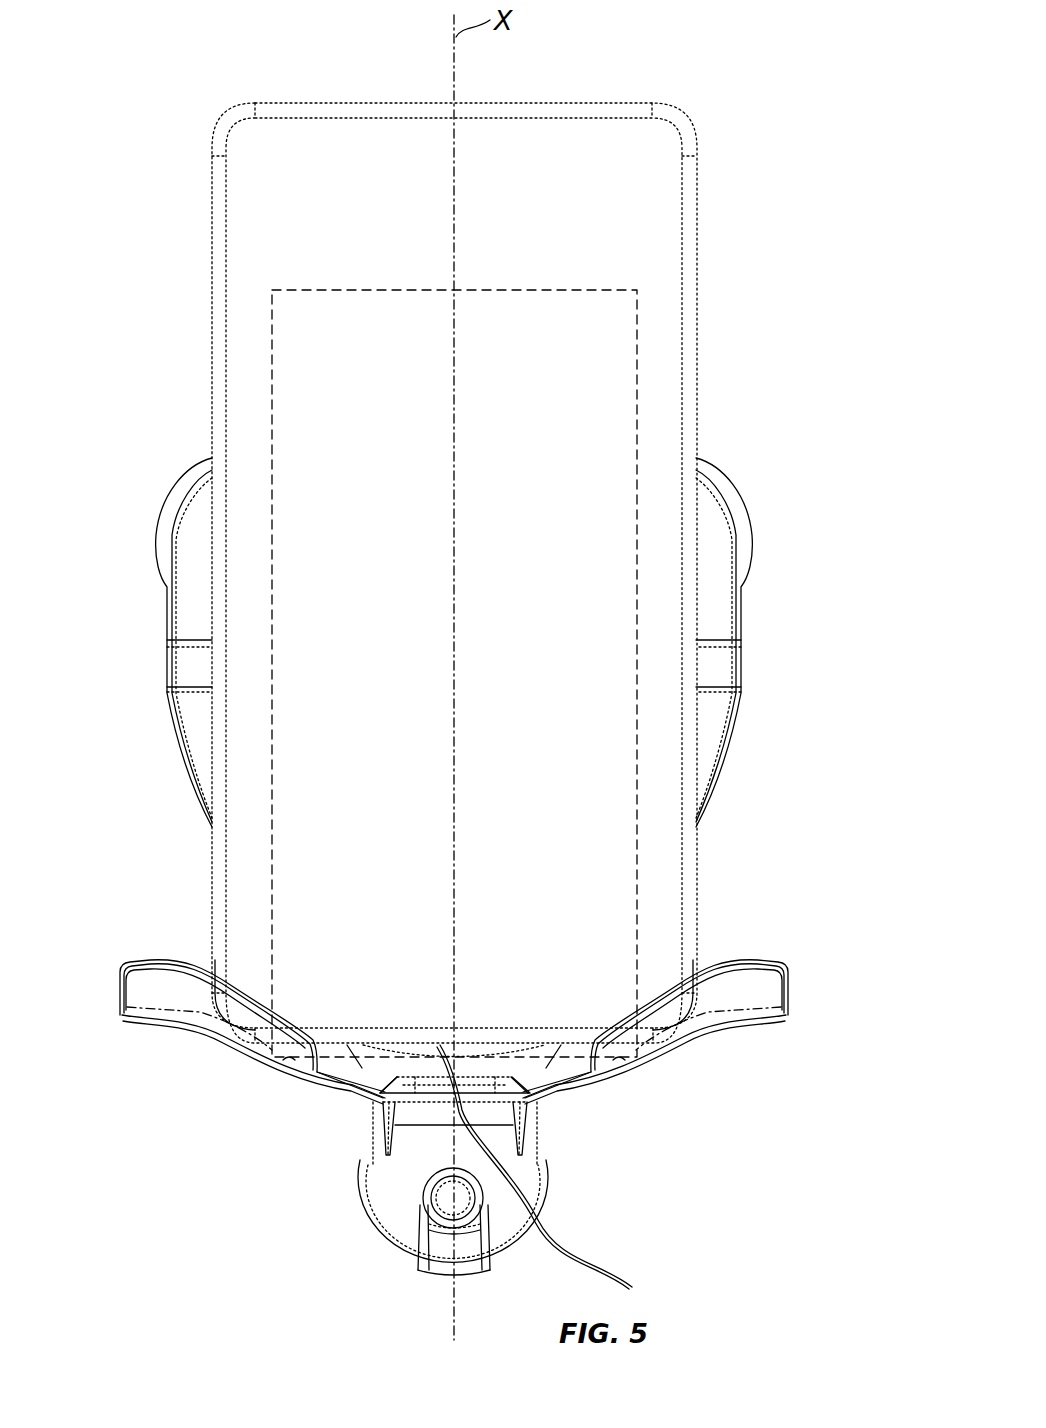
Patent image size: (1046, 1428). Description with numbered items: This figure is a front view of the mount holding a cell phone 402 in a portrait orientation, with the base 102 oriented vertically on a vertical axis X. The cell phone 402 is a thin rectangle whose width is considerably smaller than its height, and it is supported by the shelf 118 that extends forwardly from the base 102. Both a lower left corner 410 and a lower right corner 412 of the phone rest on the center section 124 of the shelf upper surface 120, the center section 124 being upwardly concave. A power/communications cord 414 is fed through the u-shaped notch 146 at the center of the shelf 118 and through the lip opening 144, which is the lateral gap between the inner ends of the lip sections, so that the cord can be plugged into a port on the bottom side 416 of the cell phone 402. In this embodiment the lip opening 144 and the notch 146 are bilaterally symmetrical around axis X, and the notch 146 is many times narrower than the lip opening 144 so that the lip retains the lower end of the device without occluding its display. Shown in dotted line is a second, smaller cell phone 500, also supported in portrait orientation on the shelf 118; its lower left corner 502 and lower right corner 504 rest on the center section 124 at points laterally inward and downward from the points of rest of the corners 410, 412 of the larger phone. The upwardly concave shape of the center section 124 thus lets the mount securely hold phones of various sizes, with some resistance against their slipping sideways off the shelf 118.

The cell phone 402 is at (667, 173).
The second, alternative, smaller cell phone 500 is at (625, 392).
The base 102 is at (727, 585).
The shelf 118 is at (158, 1002).
The lower right corner 412 is at (685, 1032).
The lower left corner 410 is at (223, 1033).
The shelf upper surface 120 is at (283, 1067).
The center section 124 is at (628, 1067).
The lip opening 144 is at (350, 1067).
The lower left corner 502 is at (273, 1057).
The lower right corner 504 is at (633, 1057).
The u-shaped notch 146 is at (440, 1097).
The power/communications cord 414 is at (585, 1248).
The bottom side 416 is at (438, 1045).